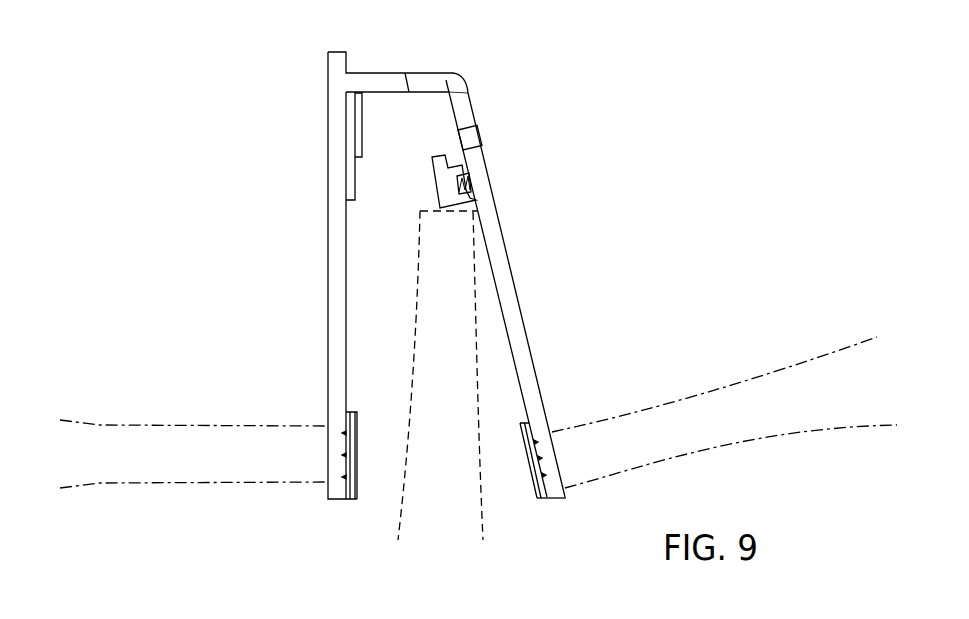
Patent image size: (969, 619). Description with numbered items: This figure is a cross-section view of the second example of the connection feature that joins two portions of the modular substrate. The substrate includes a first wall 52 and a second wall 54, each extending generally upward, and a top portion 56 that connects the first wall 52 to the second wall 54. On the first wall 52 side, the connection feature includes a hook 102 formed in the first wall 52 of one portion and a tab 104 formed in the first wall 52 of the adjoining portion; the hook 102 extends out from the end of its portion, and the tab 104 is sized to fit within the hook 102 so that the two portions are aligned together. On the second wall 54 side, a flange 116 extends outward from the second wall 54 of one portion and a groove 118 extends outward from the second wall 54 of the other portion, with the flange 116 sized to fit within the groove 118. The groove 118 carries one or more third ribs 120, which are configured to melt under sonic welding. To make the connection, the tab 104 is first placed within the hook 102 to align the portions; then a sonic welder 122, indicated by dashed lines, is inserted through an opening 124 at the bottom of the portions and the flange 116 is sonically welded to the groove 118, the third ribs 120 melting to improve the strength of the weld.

The first wall 52 is at (333, 327).
The second wall 54 is at (503, 290).
The top portion 56 is at (362, 82).
The hook 102 is at (355, 190).
The tab 104 is at (362, 133).
The flange 116 is at (452, 140).
The groove 118 is at (453, 168).
The third ribs 120 is at (468, 175).
The sonic welder 122 is at (192, 430).
The opening 124 is at (505, 473).